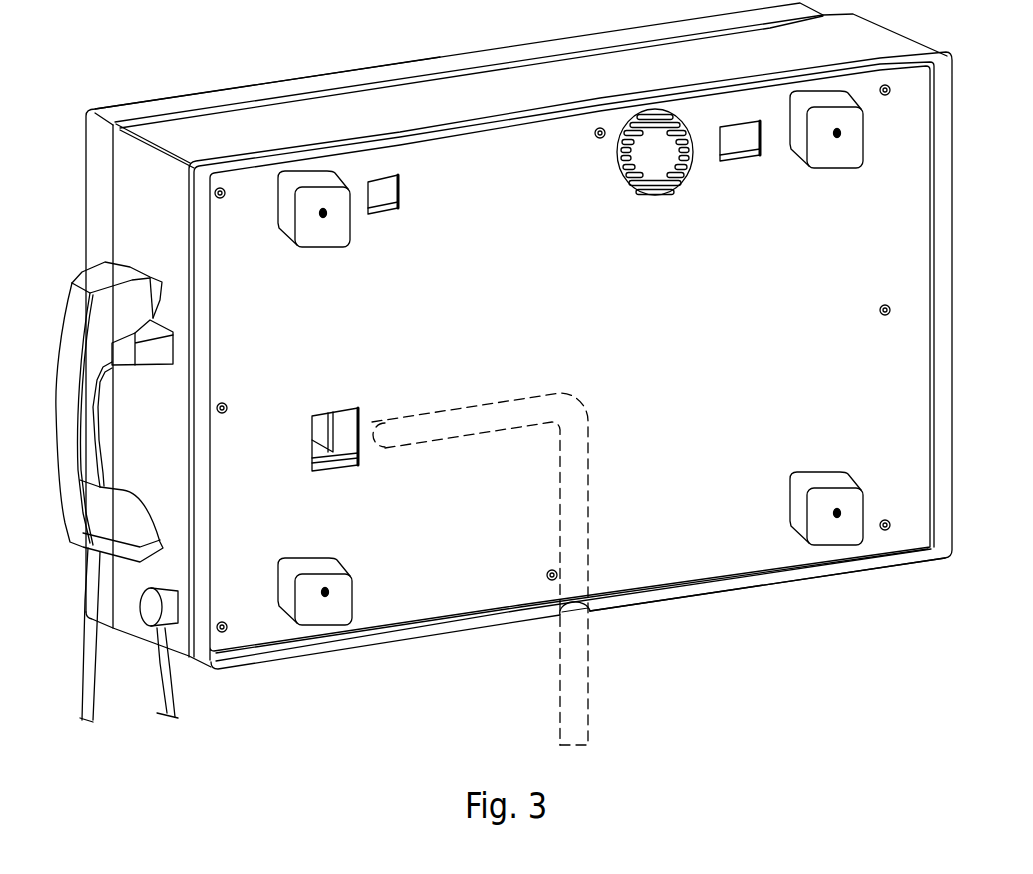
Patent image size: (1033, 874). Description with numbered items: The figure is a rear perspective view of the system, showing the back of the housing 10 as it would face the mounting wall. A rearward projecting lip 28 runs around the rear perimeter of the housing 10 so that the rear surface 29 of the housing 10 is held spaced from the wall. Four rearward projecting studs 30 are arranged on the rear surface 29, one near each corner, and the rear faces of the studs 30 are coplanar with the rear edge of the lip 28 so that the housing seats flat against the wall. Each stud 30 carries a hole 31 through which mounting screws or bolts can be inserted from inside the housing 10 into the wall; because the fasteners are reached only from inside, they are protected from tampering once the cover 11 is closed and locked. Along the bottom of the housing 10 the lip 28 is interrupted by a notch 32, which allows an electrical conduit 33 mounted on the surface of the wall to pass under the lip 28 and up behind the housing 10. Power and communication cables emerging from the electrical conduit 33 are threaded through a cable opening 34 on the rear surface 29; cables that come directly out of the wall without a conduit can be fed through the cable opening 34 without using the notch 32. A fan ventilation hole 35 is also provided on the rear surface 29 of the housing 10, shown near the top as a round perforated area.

The housing 10 is at (542, 75).
The cover 11 is at (482, 58).
The rearward projecting lip 28 is at (760, 577).
The rear surface 29 is at (678, 577).
The rearward projecting stud 30 is at (800, 515).
The hole 31 is at (841, 513).
The notch 32 is at (587, 598).
The electrical conduit 33 is at (590, 493).
The cable opening 34 is at (342, 410).
The fan ventilation hole 35 is at (655, 195).